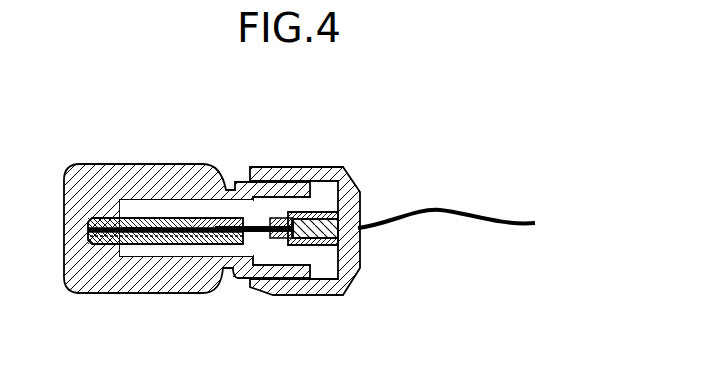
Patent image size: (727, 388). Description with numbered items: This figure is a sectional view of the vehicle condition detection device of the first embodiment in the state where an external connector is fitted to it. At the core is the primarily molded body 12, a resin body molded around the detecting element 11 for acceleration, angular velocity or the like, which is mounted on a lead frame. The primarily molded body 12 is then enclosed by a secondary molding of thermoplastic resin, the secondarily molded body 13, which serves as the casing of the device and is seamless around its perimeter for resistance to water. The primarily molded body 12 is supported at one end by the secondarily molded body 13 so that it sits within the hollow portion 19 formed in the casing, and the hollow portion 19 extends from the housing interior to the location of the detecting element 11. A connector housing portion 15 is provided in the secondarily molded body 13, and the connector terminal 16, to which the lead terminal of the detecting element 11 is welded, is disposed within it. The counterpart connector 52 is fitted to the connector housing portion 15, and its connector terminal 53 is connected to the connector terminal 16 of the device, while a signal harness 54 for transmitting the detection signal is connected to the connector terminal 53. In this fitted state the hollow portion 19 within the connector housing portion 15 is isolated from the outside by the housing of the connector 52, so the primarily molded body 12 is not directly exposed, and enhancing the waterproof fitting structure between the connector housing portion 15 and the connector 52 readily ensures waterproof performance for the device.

The detecting element 11 is at (138, 216).
The primarily molded body 12 is at (105, 216).
The secondarily molded body 13 is at (107, 277).
The connector housing portion 15 is at (280, 186).
The connector terminal 16 is at (255, 226).
The hollow portion 19 is at (177, 252).
The connector 52 is at (315, 175).
The connector terminal 53 is at (323, 213).
The signal harness 54 is at (458, 208).